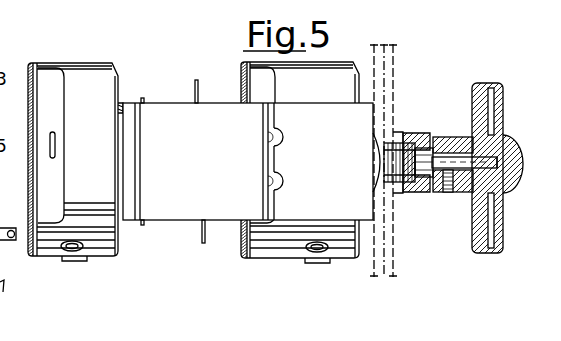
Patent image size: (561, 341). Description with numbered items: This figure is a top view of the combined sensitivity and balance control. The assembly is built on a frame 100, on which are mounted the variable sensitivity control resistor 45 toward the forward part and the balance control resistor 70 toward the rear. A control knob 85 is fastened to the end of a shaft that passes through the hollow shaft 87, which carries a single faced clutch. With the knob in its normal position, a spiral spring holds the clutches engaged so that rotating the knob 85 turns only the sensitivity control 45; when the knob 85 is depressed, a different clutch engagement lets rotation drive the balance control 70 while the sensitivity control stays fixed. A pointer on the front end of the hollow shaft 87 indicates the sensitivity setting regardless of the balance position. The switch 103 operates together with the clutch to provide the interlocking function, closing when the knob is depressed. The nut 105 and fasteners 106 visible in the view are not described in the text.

The variable sensitivity control resistor 45 is at (243, 88).
The balance control resistor 70 is at (119, 251).
The control knob 85 is at (476, 86).
The hollow shaft 87 is at (433, 150).
The frame 100 is at (186, 104).
The switch 103 is at (203, 244).
The nut 105 is at (421, 134).
The bolt 106 is at (52, 243).